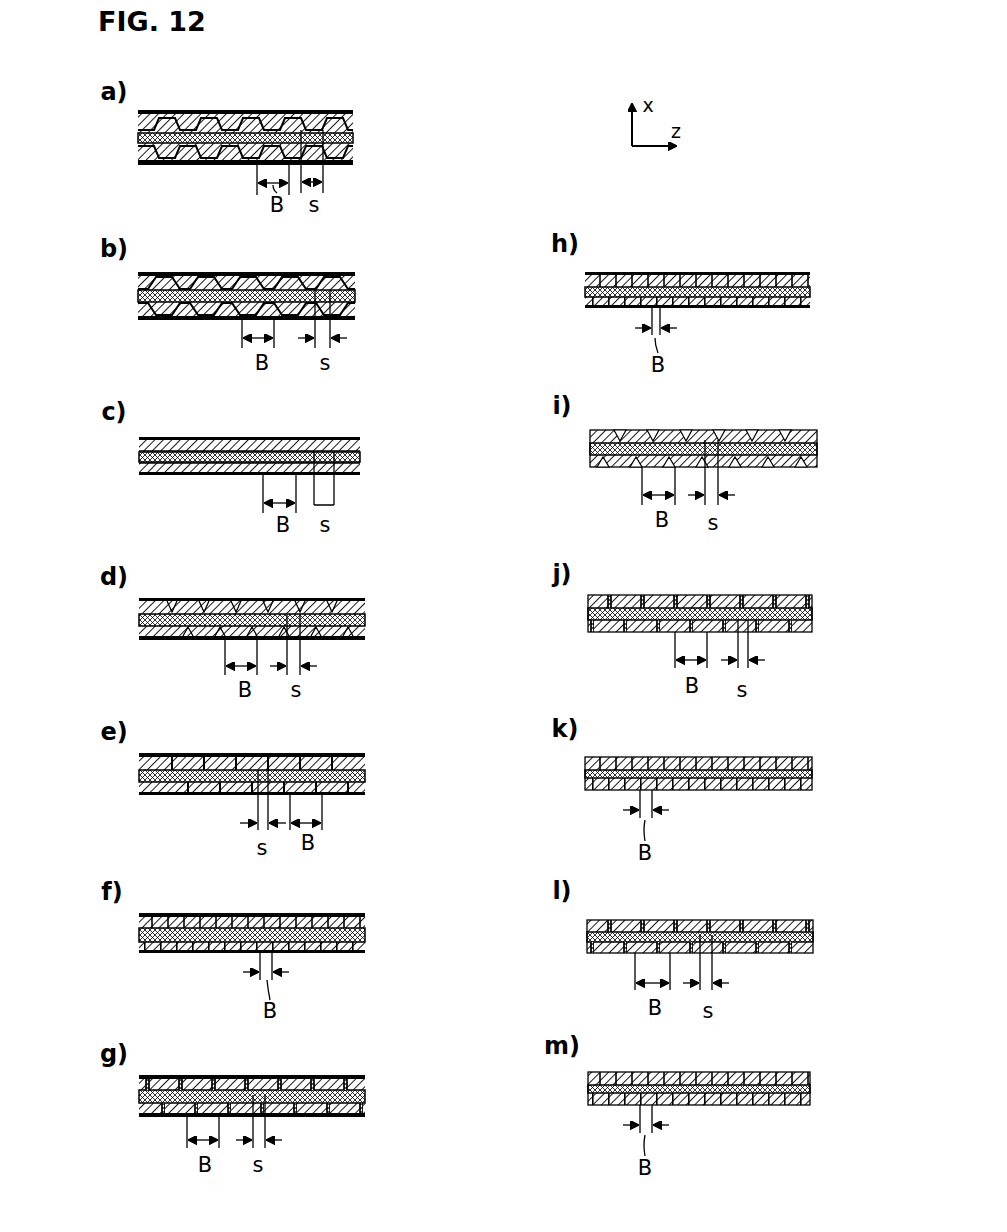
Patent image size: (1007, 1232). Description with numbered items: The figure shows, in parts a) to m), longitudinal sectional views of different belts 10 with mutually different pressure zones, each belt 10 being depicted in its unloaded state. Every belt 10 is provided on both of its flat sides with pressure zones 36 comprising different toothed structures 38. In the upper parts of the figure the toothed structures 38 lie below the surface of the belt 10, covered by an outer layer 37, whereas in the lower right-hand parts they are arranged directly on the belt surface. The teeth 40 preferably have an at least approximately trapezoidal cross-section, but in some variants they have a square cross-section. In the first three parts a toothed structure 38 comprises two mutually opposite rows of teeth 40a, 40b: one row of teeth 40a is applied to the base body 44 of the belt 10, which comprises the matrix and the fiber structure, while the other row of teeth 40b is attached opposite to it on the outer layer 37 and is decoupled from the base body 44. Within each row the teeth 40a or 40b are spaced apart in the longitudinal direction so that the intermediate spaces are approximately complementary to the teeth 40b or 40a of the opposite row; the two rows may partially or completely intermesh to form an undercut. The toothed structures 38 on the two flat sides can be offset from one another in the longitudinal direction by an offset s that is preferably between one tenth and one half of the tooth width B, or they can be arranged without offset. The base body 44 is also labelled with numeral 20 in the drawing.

The belt 10 is at (402, 137).
The membrane layer 20 is at (356, 140).
The base body 44 is at (495, 595).
The pressure zone 36 is at (136, 122).
The toothed structure 38 is at (136, 152).
The outer layer 37 is at (183, 110).
The teeth 40 is at (290, 605).
The row of teeth 40a is at (272, 128).
The row of teeth 40b is at (297, 118).